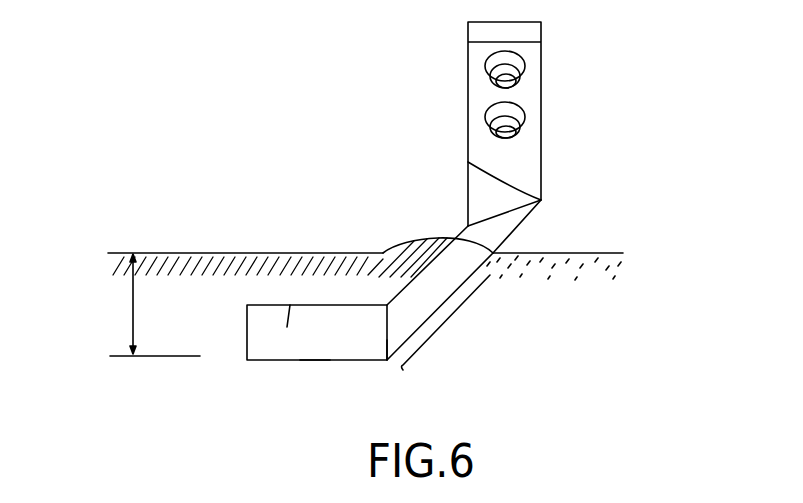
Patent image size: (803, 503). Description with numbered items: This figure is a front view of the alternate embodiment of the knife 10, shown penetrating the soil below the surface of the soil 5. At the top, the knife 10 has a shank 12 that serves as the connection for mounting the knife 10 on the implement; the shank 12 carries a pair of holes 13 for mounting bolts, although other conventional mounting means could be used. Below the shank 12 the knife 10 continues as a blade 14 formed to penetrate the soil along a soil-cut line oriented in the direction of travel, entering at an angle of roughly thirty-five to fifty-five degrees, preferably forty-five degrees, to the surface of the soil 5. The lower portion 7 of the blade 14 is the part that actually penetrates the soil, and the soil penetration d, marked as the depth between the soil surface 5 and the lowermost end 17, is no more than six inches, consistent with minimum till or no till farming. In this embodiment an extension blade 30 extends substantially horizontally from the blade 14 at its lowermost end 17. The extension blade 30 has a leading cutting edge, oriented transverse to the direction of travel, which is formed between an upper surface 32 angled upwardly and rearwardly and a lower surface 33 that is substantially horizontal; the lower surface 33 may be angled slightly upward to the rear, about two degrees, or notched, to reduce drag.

The surface of the soil 5 is at (582, 253).
The lower portion 7 is at (476, 345).
The knife 10 is at (555, 185).
The shank 12 is at (541, 143).
The holes 13 is at (523, 106).
The blade 14 is at (530, 227).
The lowermost end 17 is at (387, 362).
The extension blade 30 is at (247, 347).
The upper surface 32 is at (290, 305).
The lower surface 33 is at (315, 360).
The soil penetration d is at (132, 326).